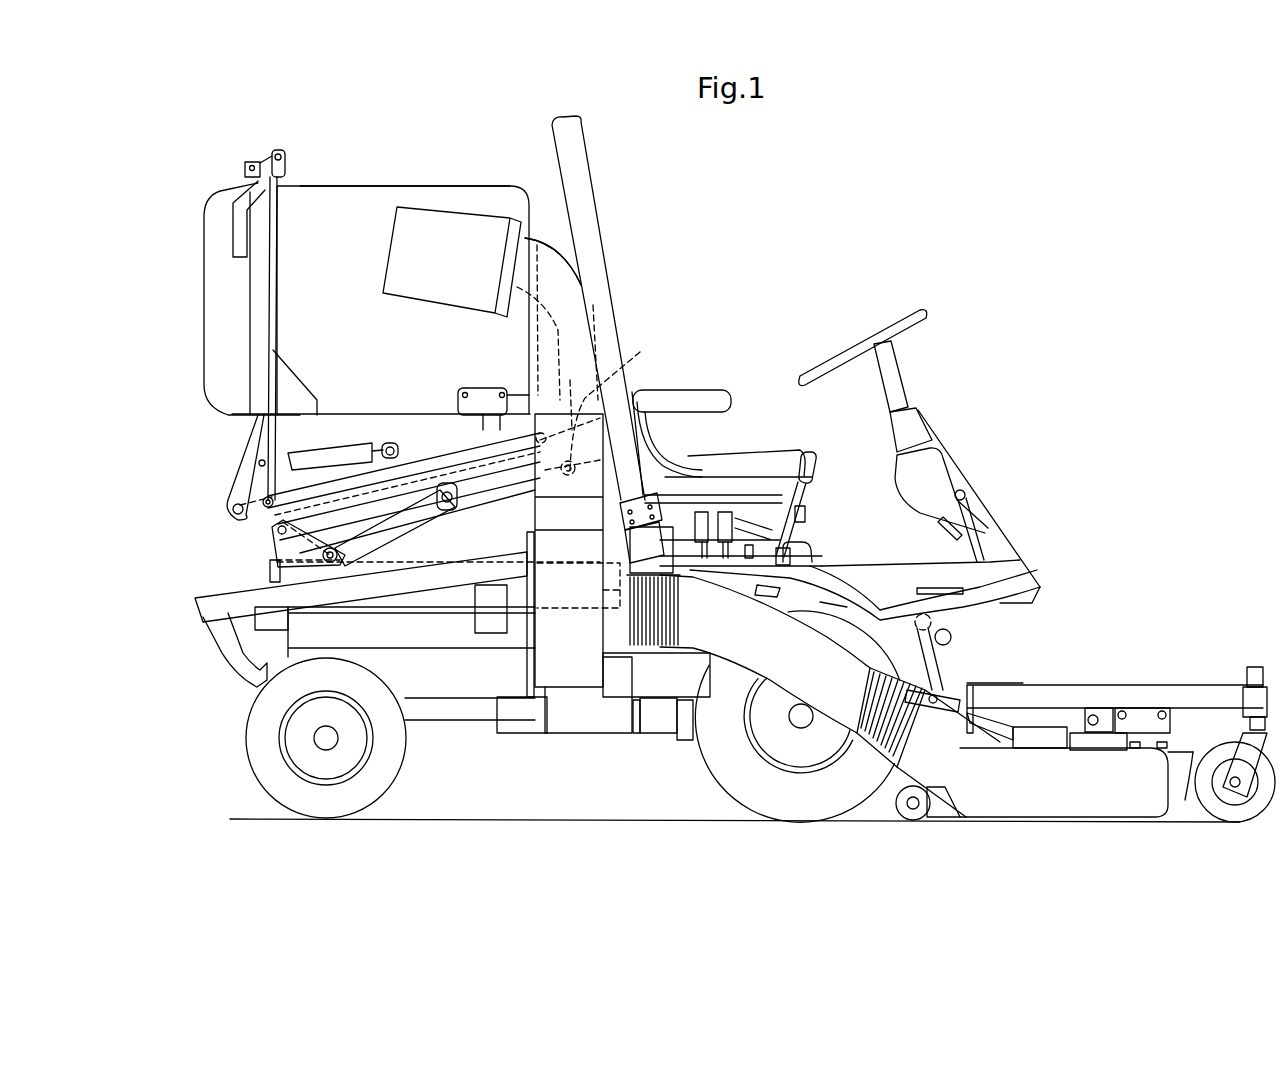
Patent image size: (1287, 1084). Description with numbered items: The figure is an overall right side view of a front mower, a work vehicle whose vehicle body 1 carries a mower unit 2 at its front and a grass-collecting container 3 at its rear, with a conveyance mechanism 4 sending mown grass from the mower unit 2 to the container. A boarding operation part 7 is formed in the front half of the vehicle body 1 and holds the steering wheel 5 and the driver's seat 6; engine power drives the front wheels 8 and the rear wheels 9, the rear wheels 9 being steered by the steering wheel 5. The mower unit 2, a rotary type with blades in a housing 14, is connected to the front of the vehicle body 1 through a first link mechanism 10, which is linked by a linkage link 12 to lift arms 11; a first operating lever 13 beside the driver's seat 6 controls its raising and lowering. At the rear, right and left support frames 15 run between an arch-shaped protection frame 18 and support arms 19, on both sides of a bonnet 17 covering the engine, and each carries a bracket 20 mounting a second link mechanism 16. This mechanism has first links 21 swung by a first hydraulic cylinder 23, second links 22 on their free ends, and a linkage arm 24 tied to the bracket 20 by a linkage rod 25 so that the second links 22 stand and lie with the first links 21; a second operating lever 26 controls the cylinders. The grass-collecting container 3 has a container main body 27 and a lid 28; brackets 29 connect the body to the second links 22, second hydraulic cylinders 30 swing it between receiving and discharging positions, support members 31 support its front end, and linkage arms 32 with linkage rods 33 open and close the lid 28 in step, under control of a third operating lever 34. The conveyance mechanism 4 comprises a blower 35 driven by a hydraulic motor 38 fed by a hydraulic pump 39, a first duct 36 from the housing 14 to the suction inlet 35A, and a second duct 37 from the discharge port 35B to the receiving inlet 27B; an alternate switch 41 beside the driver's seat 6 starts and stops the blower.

The vehicle body 1 is at (1057, 548).
The mower unit 2 is at (1120, 650).
The grass-collecting container 3 is at (440, 182).
The conveyance mechanism 4 is at (586, 690).
The steering wheel 5 is at (866, 343).
The driver's seat 6 is at (780, 450).
The boarding operation part 7 is at (769, 297).
The front wheels 8 is at (722, 760).
The rear wheels 9 is at (393, 760).
The first link mechanism 10 is at (955, 696).
The lift arms 11 is at (860, 612).
The linkage link 12 is at (942, 656).
The first operating lever 13 is at (806, 456).
The housing 14 is at (1183, 765).
The support frames 15 is at (212, 598).
The second link mechanism 16 is at (410, 456).
The bonnet 17 is at (622, 367).
The protection frame 18 is at (583, 137).
The support arms 19 is at (233, 670).
The bracket 20 is at (273, 550).
The first links 21 is at (352, 497).
The second links 22 is at (427, 457).
The first hydraulic cylinder 23 is at (405, 537).
The linkage arm 24 is at (570, 470).
The linkage rod 25 is at (470, 510).
The second operating lever 26 is at (727, 512).
The container main body 27 is at (327, 184).
The receiving inlet 27B is at (540, 312).
The lid 28 is at (213, 385).
The brackets 29 is at (233, 493).
The second hydraulic cylinders 30 is at (318, 452).
The support members 31 is at (524, 394).
The linkage arms 32 is at (268, 154).
The linkage rods 33 is at (278, 270).
The third operating lever 34 is at (700, 512).
The blower 35 is at (562, 680).
The suction inlet 35A is at (628, 618).
The discharge port 35B is at (587, 510).
The first duct 36 is at (730, 650).
The second duct 37 is at (597, 310).
The hydraulic motor 38 is at (483, 617).
The hydraulic pump 39 is at (253, 613).
The alternate switch 41 is at (810, 555).